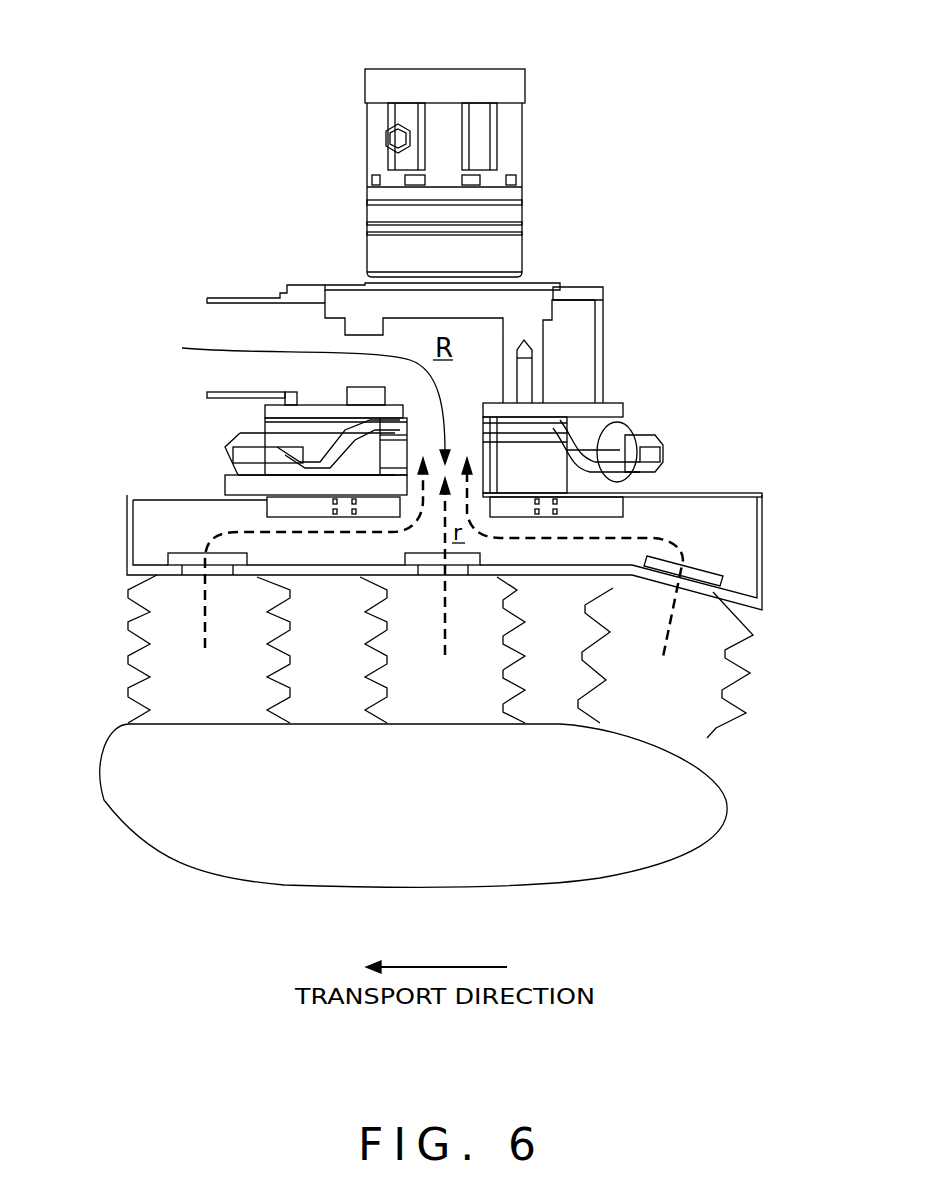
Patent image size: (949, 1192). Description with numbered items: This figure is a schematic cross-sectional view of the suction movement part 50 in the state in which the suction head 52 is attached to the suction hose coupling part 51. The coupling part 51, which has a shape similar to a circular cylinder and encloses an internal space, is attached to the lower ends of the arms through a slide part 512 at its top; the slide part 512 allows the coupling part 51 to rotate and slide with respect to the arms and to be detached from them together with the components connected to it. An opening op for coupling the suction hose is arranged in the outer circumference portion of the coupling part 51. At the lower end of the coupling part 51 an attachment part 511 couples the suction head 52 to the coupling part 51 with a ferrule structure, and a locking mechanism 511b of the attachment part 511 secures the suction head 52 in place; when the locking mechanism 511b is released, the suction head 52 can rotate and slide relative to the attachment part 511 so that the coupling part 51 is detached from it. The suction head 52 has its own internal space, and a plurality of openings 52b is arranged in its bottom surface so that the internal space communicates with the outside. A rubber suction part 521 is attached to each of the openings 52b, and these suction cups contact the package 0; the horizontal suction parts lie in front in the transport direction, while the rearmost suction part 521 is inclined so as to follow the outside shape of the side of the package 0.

The head unit 50 is at (632, 70).
The slide part 512 is at (572, 277).
The coupling part 51 is at (622, 330).
The attachment part 511 is at (642, 415).
The locking mechanism 511b is at (672, 452).
The suction head 52 is at (128, 510).
The openings 52b is at (218, 555).
The suction part 521 is at (135, 662).
The package 0 is at (728, 800).
The opening op is at (200, 308).